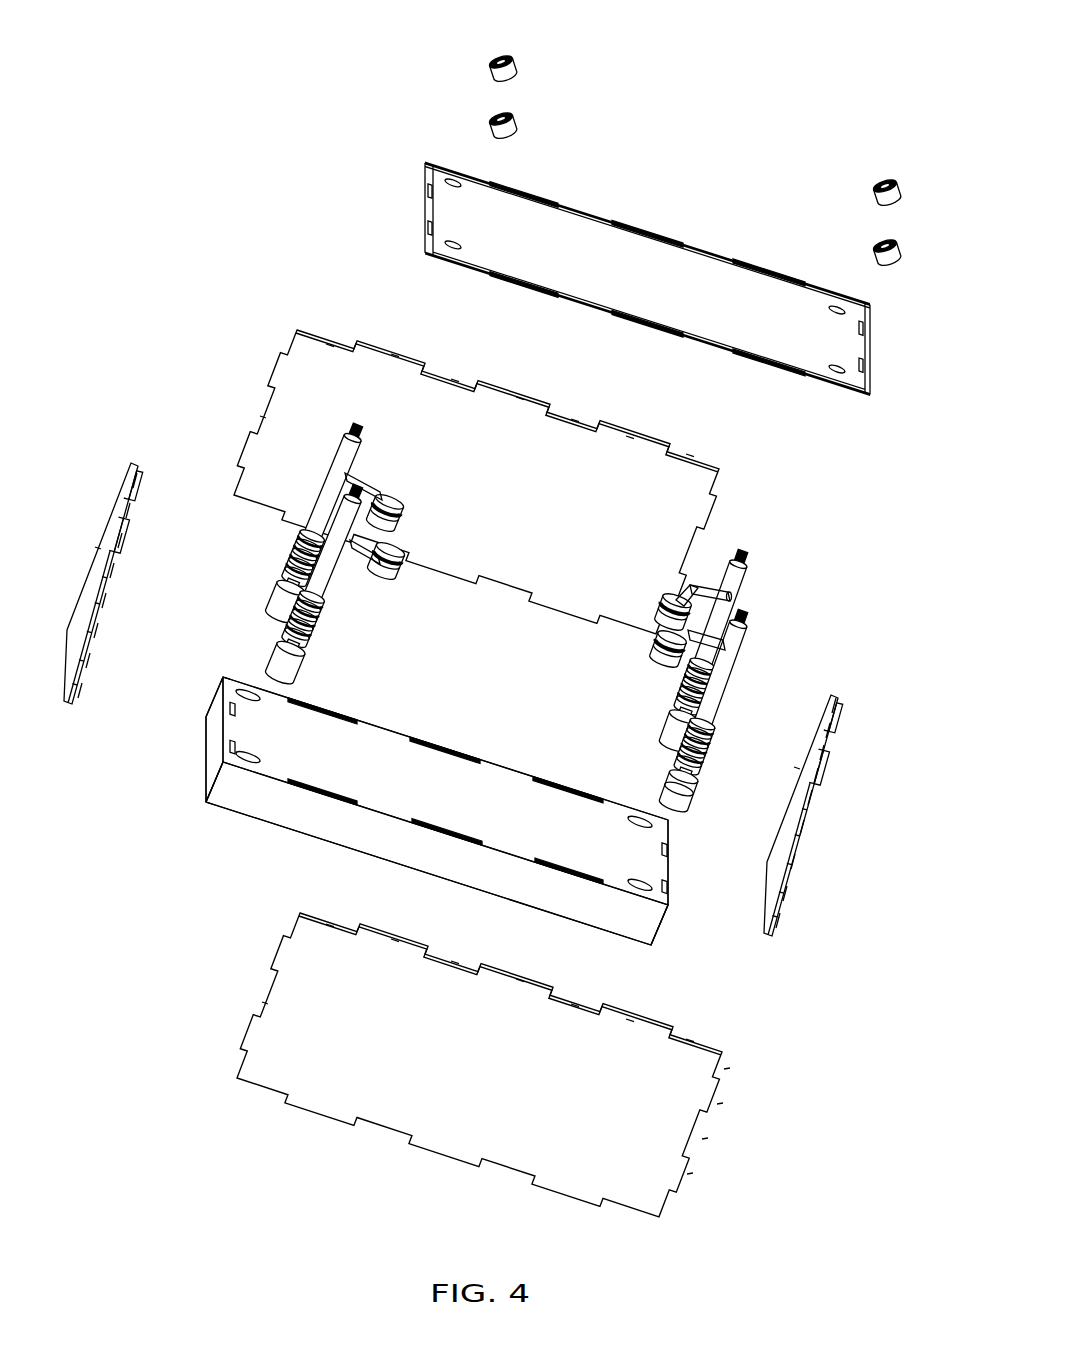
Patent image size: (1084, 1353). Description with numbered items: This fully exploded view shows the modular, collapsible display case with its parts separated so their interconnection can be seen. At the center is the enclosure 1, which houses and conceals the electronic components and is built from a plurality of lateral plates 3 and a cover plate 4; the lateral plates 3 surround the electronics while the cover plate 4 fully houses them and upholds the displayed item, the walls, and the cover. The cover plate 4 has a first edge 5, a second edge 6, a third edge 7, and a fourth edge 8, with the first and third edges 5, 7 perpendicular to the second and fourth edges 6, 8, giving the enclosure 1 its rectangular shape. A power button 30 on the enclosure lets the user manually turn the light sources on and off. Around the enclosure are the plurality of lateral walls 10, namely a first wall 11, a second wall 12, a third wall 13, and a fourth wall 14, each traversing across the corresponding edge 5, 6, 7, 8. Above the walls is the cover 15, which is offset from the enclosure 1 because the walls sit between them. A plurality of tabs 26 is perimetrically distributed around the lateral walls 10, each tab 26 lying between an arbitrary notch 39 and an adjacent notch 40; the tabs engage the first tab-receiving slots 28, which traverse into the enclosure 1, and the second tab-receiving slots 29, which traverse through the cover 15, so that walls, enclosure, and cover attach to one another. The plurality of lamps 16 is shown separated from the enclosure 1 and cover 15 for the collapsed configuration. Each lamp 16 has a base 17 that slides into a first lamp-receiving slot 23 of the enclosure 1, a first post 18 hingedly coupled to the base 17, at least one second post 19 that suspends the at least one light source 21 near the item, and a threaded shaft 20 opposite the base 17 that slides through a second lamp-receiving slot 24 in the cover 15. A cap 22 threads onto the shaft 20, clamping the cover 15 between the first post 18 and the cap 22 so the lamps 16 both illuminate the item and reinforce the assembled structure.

The enclosure 1 is at (684, 904).
The lateral plates 3 is at (206, 768).
The cover plate 4 is at (220, 718).
The first edge 5 is at (408, 730).
The second edge 6 is at (670, 838).
The third edge 7 is at (520, 850).
The fourth edge 8 is at (215, 688).
The lateral walls 10 is at (263, 417).
The first wall 11 is at (702, 470).
The second wall 12 is at (838, 695).
The third wall 13 is at (722, 1048).
The fourth wall 14 is at (142, 478).
The cover 15 is at (870, 350).
The lamps 16 is at (287, 563).
The base 17 is at (695, 792).
The first post 18 is at (727, 668).
The second post 19 is at (738, 638).
The threaded shaft 20 is at (728, 598).
The light source 21 is at (660, 638).
The cap 22 is at (510, 52).
The first lamp-receiving slots 23 is at (246, 690).
The second lamp-receiving slots 24 is at (431, 184).
The tabs 26 is at (395, 355).
The first tab-receiving slots 28 is at (295, 703).
The second tab-receiving slots 29 is at (528, 196).
The power button 30 is at (207, 795).
The arbitrary notch 39 is at (330, 345).
The adjacent notch 40 is at (455, 380).